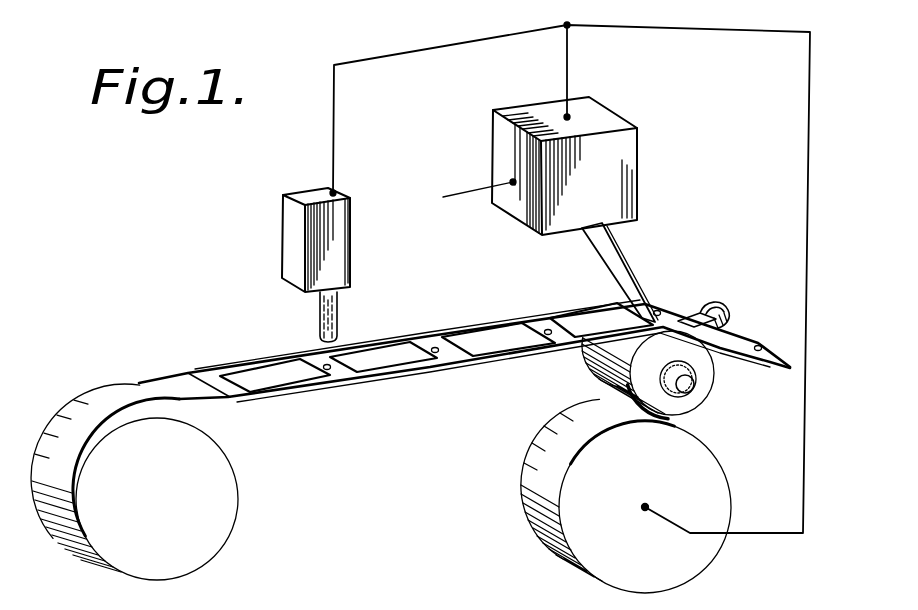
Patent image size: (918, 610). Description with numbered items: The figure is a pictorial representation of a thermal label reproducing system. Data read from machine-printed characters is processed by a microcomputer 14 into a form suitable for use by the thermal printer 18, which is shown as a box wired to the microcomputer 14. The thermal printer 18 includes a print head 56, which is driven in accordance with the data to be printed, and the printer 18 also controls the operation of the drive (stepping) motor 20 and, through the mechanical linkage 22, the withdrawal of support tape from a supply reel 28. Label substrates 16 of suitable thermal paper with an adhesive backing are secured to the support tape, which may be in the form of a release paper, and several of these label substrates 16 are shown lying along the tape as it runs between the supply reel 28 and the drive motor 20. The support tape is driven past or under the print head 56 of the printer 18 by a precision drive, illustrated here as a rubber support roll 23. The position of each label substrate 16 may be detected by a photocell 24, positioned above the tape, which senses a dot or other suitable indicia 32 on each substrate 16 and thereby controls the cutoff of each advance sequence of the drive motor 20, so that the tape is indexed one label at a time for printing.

The microcomputer 14 is at (436, 231).
The label substrate 16 is at (288, 333).
The thermal printer 18 is at (615, 167).
The drive (stepping) motor 20 is at (695, 495).
The mechanical linkage 22 is at (693, 404).
The rubber support roll 23 is at (703, 382).
The photocell 24 is at (295, 237).
The supply reel 28 is at (202, 515).
The indicia 32 is at (280, 392).
The print head 56 is at (615, 285).